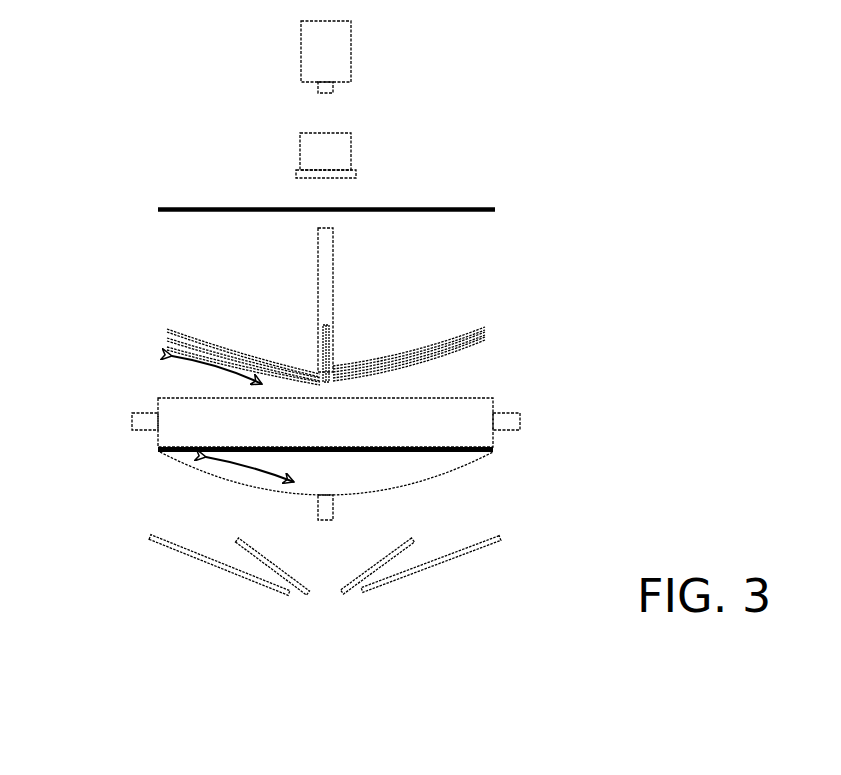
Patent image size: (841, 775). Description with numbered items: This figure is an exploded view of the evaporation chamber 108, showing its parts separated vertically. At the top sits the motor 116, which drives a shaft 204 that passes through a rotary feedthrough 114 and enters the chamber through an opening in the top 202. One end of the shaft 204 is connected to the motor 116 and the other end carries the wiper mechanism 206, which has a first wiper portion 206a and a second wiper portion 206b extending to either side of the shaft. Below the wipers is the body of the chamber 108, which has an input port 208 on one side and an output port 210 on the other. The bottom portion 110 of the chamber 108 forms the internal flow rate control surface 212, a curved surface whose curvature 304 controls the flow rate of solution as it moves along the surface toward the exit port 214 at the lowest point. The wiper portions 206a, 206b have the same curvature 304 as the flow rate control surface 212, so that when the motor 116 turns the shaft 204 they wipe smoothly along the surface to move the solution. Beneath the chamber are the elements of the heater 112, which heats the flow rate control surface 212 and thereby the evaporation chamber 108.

The evaporation chamber 108 is at (557, 348).
The bottom portion 110 is at (206, 462).
The heater 112 is at (470, 548).
The rotary feedthrough 114 is at (300, 148).
The motor 116 is at (300, 50).
The top 202 is at (185, 208).
The shaft 204 is at (318, 288).
The wiper mechanism 206 is at (352, 317).
The first wiper portion 206a is at (213, 350).
The second wiper portion 206b is at (434, 347).
The input port 208 is at (131, 422).
The output port 210 is at (521, 420).
The internal flow rate control surface 212 is at (434, 468).
The exit port 214 is at (314, 511).
The curvature 304 is at (195, 368).